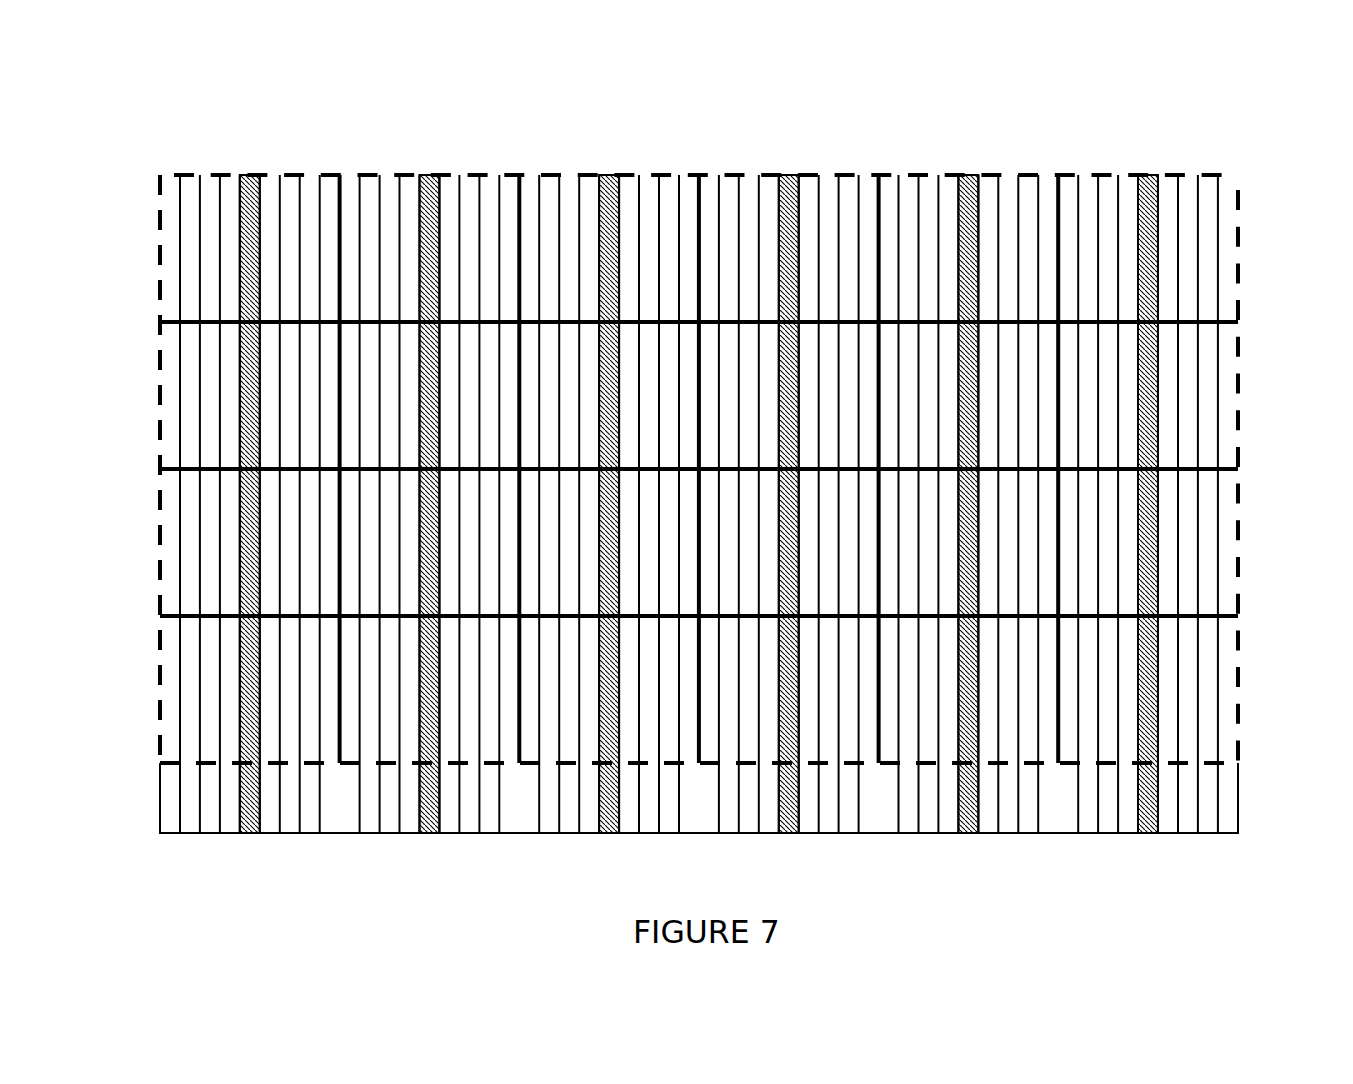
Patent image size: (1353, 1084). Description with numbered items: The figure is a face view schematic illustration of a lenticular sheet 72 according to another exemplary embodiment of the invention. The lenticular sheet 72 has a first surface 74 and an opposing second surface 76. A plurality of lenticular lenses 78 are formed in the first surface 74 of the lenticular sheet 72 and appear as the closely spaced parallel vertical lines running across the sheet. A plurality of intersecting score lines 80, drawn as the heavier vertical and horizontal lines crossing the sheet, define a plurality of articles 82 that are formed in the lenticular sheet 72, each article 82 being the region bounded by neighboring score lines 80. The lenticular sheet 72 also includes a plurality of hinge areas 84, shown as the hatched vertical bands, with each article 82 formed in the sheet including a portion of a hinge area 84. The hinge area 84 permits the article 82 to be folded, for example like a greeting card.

The lenticular sheet 72 is at (1209, 104).
The first surface 74 is at (1227, 207).
The second surface 76 is at (1222, 314).
The lenticular lenses 78 is at (908, 203).
The score lines 80 is at (342, 229).
The articles 82 is at (291, 213).
The hinge areas 84 is at (252, 177).